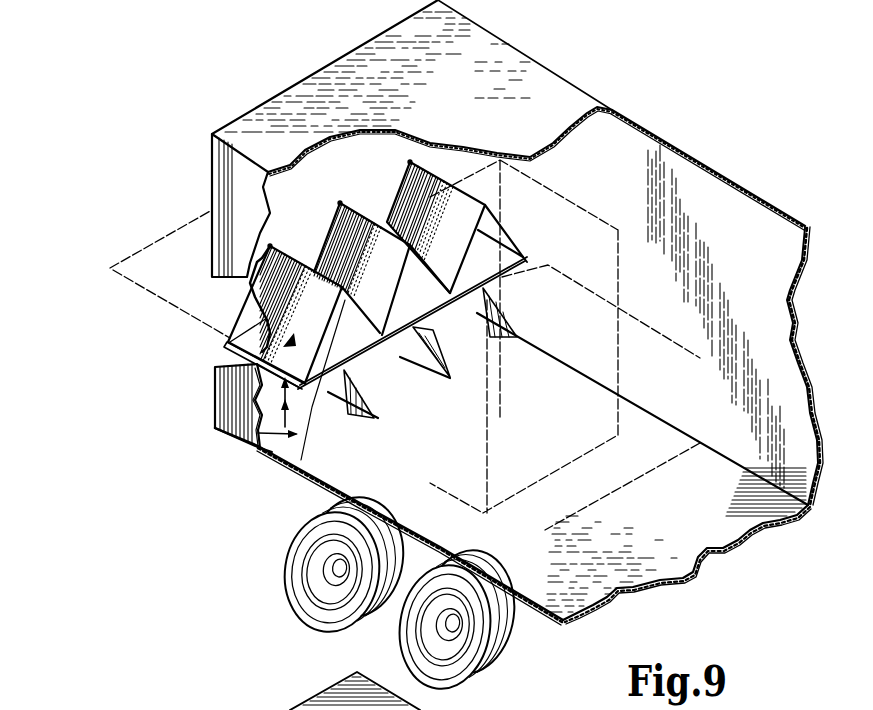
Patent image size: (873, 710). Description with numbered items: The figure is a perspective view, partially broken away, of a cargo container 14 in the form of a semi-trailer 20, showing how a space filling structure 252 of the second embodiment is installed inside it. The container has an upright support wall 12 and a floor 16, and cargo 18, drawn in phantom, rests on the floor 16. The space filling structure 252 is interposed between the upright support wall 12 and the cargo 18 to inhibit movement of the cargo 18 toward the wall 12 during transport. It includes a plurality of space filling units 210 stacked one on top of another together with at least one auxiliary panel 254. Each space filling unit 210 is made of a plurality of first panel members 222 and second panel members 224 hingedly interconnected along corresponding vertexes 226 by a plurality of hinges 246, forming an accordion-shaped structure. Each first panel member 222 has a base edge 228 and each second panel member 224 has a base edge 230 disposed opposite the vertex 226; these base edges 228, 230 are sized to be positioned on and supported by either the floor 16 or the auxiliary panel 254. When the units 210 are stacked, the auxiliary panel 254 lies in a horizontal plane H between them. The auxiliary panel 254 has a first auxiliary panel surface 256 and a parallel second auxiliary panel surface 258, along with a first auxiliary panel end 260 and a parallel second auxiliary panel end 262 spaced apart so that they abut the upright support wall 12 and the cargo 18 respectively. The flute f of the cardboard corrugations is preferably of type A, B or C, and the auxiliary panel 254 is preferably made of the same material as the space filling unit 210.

The upright support wall 12 is at (335, 146).
The cargo container 14 is at (541, 97).
The floor 16 is at (730, 548).
The cargo 18 is at (546, 183).
The semi-trailer 20 is at (572, 106).
The space filling unit 210 is at (214, 427).
The first panel members 222 is at (314, 276).
The second panel members 224 is at (510, 235).
The vertexes 226 is at (463, 172).
The base edge 228 is at (267, 450).
The base edge 230 is at (530, 258).
The hinges 246 is at (445, 165).
The space filling structure 252 is at (158, 323).
The auxiliary panel 254 is at (227, 344).
The first auxiliary panel surface 256 is at (250, 340).
The second auxiliary panel surface 258 is at (215, 366).
The first auxiliary panel end 260 is at (506, 266).
The second auxiliary panel end 262 is at (270, 335).
The horizontal plane H is at (688, 352).
The flute f is at (278, 385).